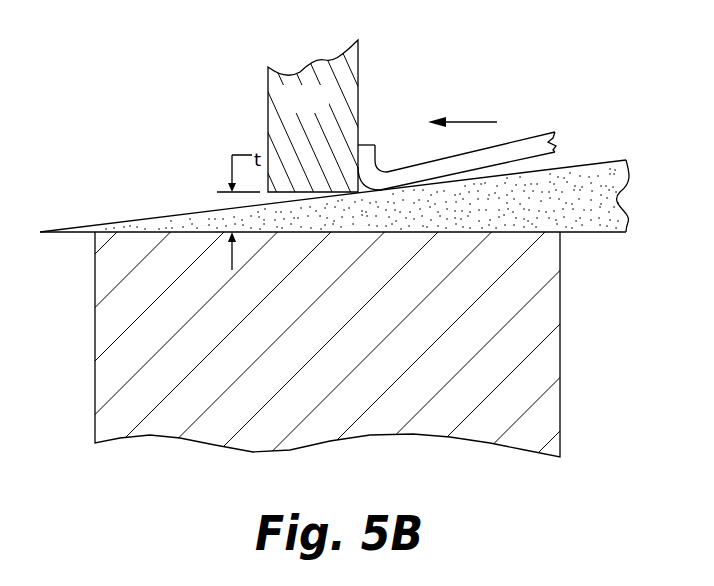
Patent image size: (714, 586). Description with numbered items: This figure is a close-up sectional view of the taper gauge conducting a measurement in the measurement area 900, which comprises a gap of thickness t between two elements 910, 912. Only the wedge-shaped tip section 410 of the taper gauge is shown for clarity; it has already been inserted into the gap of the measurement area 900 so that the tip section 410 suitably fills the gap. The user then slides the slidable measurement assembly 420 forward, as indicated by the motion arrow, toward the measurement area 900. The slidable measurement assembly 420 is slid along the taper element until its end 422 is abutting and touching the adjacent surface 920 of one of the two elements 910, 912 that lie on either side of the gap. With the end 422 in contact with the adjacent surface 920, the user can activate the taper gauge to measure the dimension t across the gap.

The wedge-shaped tip section 410 is at (142, 205).
The measurement area 900 is at (210, 205).
The element 910 is at (325, 110).
The element 912 is at (333, 362).
The adjacent surface 920 is at (348, 155).
The slidable measurement assembly 420 is at (530, 126).
The end 422 is at (374, 144).